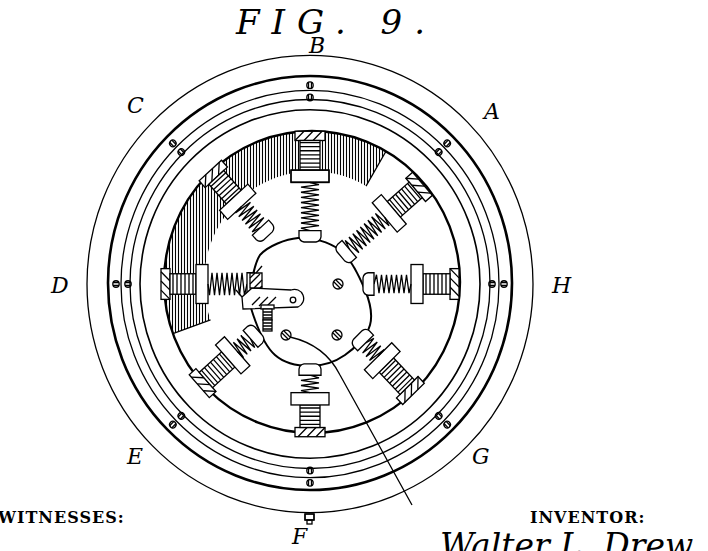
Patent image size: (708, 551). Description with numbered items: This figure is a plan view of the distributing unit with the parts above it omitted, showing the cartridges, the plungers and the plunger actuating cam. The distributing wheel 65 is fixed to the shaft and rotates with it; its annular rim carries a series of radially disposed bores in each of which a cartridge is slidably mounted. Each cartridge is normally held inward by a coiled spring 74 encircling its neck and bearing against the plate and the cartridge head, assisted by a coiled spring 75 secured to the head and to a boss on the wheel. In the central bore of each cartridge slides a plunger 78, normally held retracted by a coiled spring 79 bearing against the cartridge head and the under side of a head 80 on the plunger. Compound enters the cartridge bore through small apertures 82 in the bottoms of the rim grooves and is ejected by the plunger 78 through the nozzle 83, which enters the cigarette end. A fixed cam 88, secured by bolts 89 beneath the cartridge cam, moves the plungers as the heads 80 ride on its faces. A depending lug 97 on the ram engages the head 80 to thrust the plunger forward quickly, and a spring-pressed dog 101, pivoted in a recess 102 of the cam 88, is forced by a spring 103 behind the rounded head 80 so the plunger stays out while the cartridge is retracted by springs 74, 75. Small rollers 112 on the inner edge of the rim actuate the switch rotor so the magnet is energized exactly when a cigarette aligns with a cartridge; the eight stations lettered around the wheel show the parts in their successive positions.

The distributing wheel 65 is at (523, 366).
The coiled spring 74 is at (298, 160).
The coiled spring 75 is at (332, 176).
The plunger 78 is at (312, 519).
The coiled spring 79 is at (243, 301).
The head 80 is at (250, 290).
The apertures 82 is at (503, 283).
The nozzle 83 is at (304, 516).
The fixed cam 88 is at (366, 337).
The bolts 89 is at (340, 340).
The depending lug 97 is at (250, 283).
The spring-pressed dog 101 is at (244, 308).
The recess 102 is at (256, 275).
The spring 103 is at (266, 331).
The rollers 112 is at (428, 190).